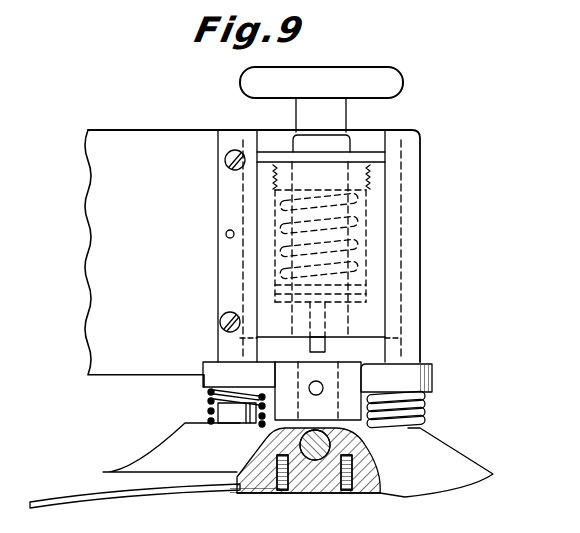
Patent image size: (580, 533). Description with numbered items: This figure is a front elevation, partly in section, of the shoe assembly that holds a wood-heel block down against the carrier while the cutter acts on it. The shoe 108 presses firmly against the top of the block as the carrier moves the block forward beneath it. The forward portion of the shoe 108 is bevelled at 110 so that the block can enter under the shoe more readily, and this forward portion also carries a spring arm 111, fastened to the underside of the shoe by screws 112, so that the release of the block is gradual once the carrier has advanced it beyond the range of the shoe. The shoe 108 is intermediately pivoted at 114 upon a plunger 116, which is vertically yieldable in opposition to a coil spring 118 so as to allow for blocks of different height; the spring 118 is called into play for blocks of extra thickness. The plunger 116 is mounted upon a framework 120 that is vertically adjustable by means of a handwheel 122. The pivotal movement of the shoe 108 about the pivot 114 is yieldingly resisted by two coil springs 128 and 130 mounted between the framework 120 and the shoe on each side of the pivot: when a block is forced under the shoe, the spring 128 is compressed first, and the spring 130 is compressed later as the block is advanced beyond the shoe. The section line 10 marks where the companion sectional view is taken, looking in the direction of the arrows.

The section line 10 is at (306, 43).
The shoe 108 is at (474, 427).
The bevelled forward portion of the shoe 110 is at (478, 486).
The spring arm 111 is at (66, 473).
The screws 112 is at (282, 493).
The pivot 114 is at (325, 445).
The plunger 116 is at (383, 350).
The coil spring 118 is at (290, 203).
The framework 120 is at (380, 235).
The handwheel 122 is at (389, 68).
The coil spring 128 is at (428, 400).
The coil spring 130 is at (206, 400).